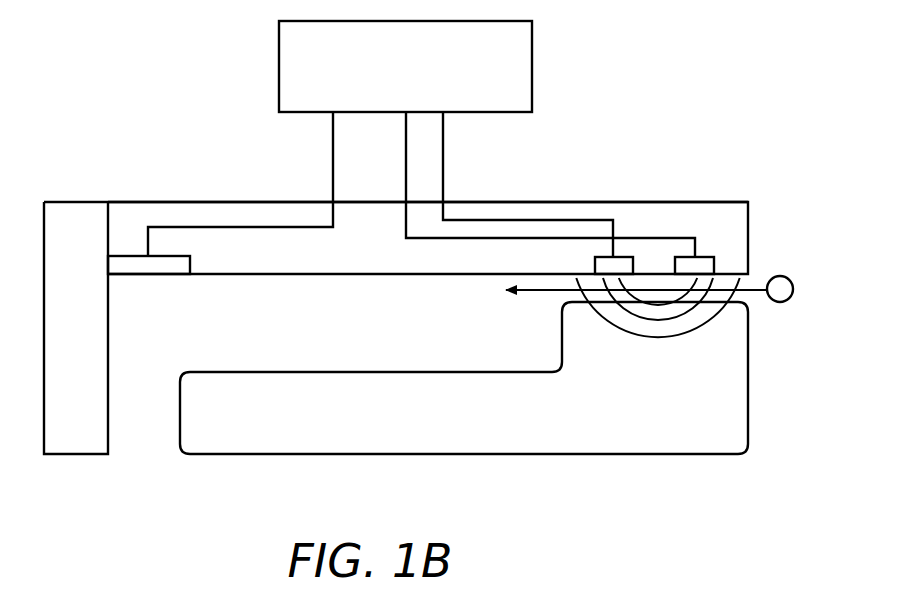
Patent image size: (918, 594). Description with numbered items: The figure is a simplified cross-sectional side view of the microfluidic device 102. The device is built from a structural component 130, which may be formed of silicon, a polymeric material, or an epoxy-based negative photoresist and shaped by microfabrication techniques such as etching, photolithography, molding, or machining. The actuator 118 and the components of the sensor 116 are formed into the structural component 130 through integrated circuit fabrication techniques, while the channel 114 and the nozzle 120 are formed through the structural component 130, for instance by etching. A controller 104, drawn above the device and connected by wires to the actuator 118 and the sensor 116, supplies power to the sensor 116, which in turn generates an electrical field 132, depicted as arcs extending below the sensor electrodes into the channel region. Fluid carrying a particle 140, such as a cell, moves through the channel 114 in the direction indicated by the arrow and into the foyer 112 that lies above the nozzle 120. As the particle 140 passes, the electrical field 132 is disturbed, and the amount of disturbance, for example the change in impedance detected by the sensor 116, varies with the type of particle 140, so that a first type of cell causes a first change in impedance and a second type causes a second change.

The microfluidic device 102 is at (183, 113).
The controller 104 is at (425, 92).
The foyer 112 is at (407, 361).
The channel 114 is at (753, 301).
The sensor 116 is at (657, 240).
The actuator 118 is at (130, 255).
The nozzle 120 is at (148, 425).
The structural component 130 is at (565, 167).
The electrical field 132 is at (660, 348).
The particle 140 is at (795, 283).